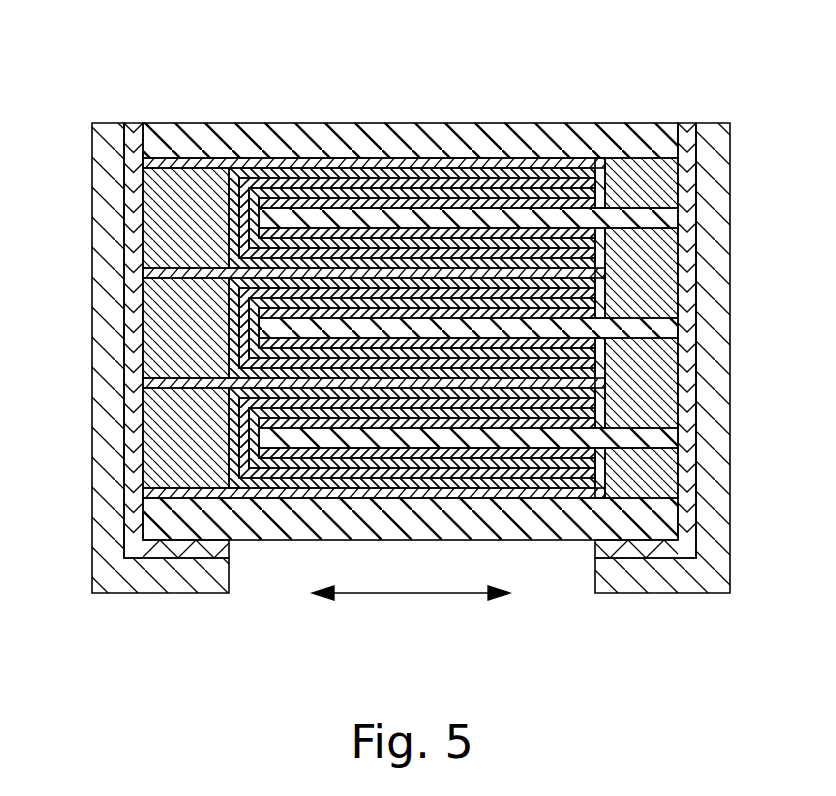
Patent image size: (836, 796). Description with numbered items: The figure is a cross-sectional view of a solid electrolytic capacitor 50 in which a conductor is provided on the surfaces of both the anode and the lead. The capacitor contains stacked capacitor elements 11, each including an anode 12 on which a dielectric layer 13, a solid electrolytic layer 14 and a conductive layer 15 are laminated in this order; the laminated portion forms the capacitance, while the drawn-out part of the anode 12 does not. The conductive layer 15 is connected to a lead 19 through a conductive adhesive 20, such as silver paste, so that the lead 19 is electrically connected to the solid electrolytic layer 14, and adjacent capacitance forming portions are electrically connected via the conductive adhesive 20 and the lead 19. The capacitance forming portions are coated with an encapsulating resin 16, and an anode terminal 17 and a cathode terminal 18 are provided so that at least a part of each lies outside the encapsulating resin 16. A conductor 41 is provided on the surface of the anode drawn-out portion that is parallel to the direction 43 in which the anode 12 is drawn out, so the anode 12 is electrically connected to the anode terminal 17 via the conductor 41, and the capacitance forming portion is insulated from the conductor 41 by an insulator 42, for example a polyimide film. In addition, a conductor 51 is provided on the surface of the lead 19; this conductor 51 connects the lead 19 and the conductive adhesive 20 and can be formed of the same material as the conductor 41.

The solid electrolytic capacitor 50 is at (70, 103).
The capacitor element 11 is at (458, 244).
The anode 12 is at (287, 60).
The dielectric layer 13 is at (372, 203).
The solid electrolytic layer 14 is at (334, 192).
The conductive layer 15 is at (293, 182).
The encapsulating resin 16 is at (533, 123).
The anode terminal 17 is at (730, 325).
The cathode terminal 18 is at (92, 190).
The lead 19 is at (212, 165).
The conductive adhesive 20 is at (134, 123).
The conductor 41 is at (665, 173).
The insulator 42 is at (598, 165).
The direction 43 is at (409, 596).
The conductor 51 is at (150, 238).